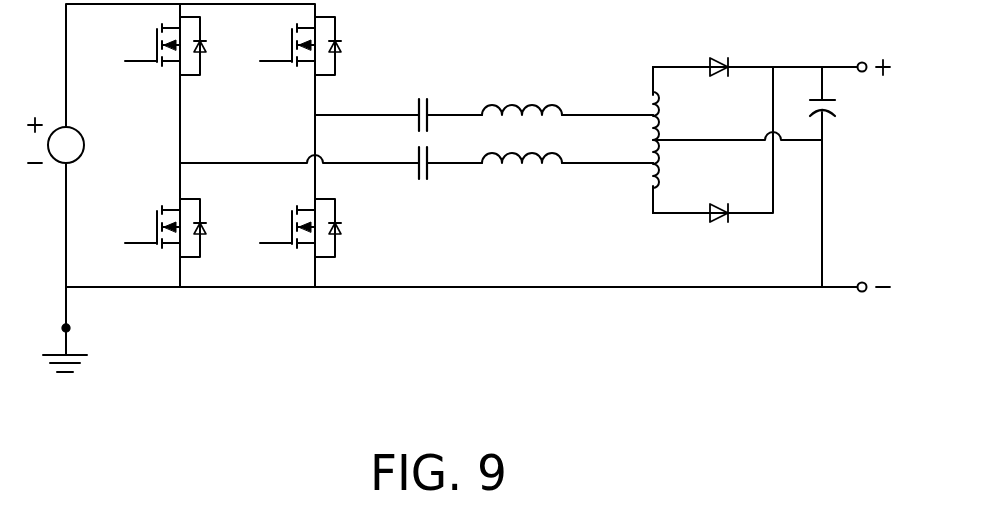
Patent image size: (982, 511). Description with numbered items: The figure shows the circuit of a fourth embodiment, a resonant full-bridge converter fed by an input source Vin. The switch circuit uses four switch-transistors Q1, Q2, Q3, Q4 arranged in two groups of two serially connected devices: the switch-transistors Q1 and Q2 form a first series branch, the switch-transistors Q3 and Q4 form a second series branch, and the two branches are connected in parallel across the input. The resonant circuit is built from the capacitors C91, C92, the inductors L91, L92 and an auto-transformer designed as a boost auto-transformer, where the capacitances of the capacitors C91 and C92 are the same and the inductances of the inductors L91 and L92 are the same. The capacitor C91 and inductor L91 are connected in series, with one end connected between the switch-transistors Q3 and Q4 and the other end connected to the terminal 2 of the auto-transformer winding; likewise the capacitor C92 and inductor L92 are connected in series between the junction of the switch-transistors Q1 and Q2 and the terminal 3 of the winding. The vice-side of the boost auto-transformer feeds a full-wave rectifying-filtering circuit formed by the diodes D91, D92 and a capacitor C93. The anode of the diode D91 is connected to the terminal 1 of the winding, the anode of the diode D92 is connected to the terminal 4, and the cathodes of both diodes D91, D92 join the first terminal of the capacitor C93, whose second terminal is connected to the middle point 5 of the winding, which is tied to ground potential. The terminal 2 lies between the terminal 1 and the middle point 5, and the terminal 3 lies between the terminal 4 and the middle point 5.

The input voltage source Vin is at (75, 140).
The switch-transistor Q1 is at (181, 46).
The switch-transistor Q2 is at (182, 228).
The switch-transistor Q3 is at (318, 46).
The switch-transistor Q4 is at (318, 228).
The capacitor C91 is at (427, 99).
The capacitor C92 is at (427, 180).
The inductor L91 is at (522, 91).
The inductor L92 is at (522, 179).
The terminal of the winding 1 is at (652, 93).
The terminal of the winding 2 is at (652, 113).
The terminal of the winding 3 is at (652, 160).
The terminal of the winding 4 is at (652, 188).
The middle point of the winding 5 is at (656, 140).
The diode D91 is at (722, 49).
The diode D92 is at (722, 231).
The capacitor C93 is at (847, 110).